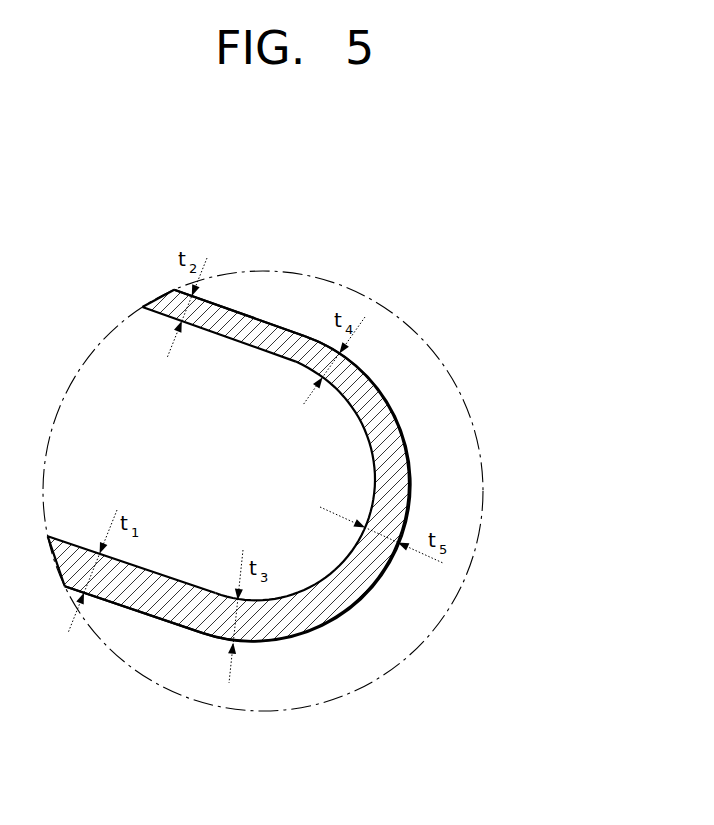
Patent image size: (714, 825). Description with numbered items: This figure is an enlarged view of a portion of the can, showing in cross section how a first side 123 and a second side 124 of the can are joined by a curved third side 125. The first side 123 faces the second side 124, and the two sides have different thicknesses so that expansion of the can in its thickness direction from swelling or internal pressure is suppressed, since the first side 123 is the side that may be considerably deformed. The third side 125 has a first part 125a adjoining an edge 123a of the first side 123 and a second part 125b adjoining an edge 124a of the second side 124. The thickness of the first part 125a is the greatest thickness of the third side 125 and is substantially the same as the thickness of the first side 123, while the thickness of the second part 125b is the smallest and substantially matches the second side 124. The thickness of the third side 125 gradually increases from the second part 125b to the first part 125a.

The first side 123 is at (113, 607).
The edge of the first side 123a is at (165, 622).
The second side 124 is at (244, 311).
The edge of the second side 124a is at (278, 325).
The third side 125 is at (412, 469).
The first part of the third side 125a is at (278, 643).
The second part of the third side 125b is at (357, 365).